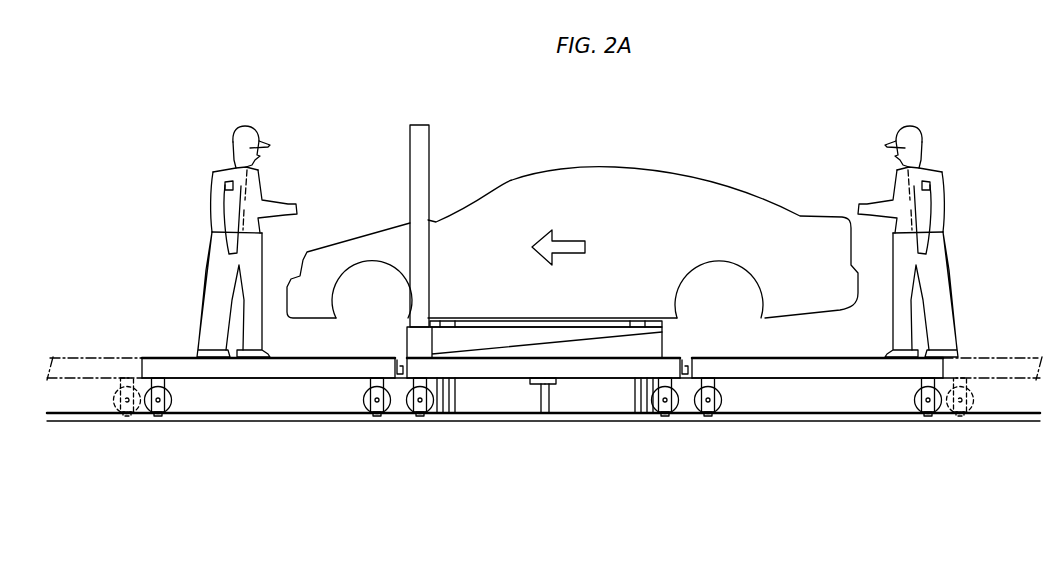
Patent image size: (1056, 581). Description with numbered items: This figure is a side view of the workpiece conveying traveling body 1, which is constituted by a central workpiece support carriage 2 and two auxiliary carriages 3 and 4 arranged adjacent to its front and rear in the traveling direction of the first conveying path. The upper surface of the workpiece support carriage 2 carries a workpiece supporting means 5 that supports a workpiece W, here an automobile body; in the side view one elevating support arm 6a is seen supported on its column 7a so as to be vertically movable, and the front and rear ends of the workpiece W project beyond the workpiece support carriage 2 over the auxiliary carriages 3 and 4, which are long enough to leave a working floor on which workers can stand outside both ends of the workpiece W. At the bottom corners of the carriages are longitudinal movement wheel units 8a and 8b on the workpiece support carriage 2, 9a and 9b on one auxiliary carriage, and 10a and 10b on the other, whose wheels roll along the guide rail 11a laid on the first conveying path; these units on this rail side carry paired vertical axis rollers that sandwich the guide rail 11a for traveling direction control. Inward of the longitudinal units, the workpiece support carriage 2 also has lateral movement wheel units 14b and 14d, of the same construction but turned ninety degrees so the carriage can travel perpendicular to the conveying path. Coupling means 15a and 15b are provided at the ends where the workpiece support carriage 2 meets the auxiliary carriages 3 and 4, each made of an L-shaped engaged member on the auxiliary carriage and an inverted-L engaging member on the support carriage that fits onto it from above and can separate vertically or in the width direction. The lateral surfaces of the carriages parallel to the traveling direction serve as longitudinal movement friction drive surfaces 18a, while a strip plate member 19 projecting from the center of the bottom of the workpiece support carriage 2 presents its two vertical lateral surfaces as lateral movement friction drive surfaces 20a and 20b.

The workpiece conveying traveling body 1 is at (632, 355).
The workpiece support carriage 2 is at (603, 355).
The auxiliary carriage 3 is at (178, 355).
The auxiliary carriage 4 is at (82, 355).
The workpiece supporting means 5 is at (402, 152).
The elevating support arm 6a is at (491, 333).
The column 7a is at (420, 183).
The longitudinal movement wheel unit 8a is at (408, 415).
The longitudinal movement wheel unit 8b is at (682, 416).
The longitudinal movement wheel unit 9a is at (177, 404).
The longitudinal movement wheel unit 9b is at (357, 402).
The longitudinal movement wheel unit 10a is at (727, 405).
The longitudinal movement wheel unit 10b is at (110, 399).
The guide rail 11a is at (221, 413).
The lateral movement wheel unit 14b is at (448, 415).
The lateral movement wheel unit 14d is at (633, 415).
The coupling means 15a is at (394, 353).
The coupling means 15b is at (690, 352).
The longitudinal movement friction drive surface 18a is at (308, 366).
The strip plate member 19 is at (545, 410).
The lateral movement friction drive surface 20a is at (530, 393).
The lateral movement friction drive surface 20b is at (560, 393).
The workpiece W is at (644, 167).